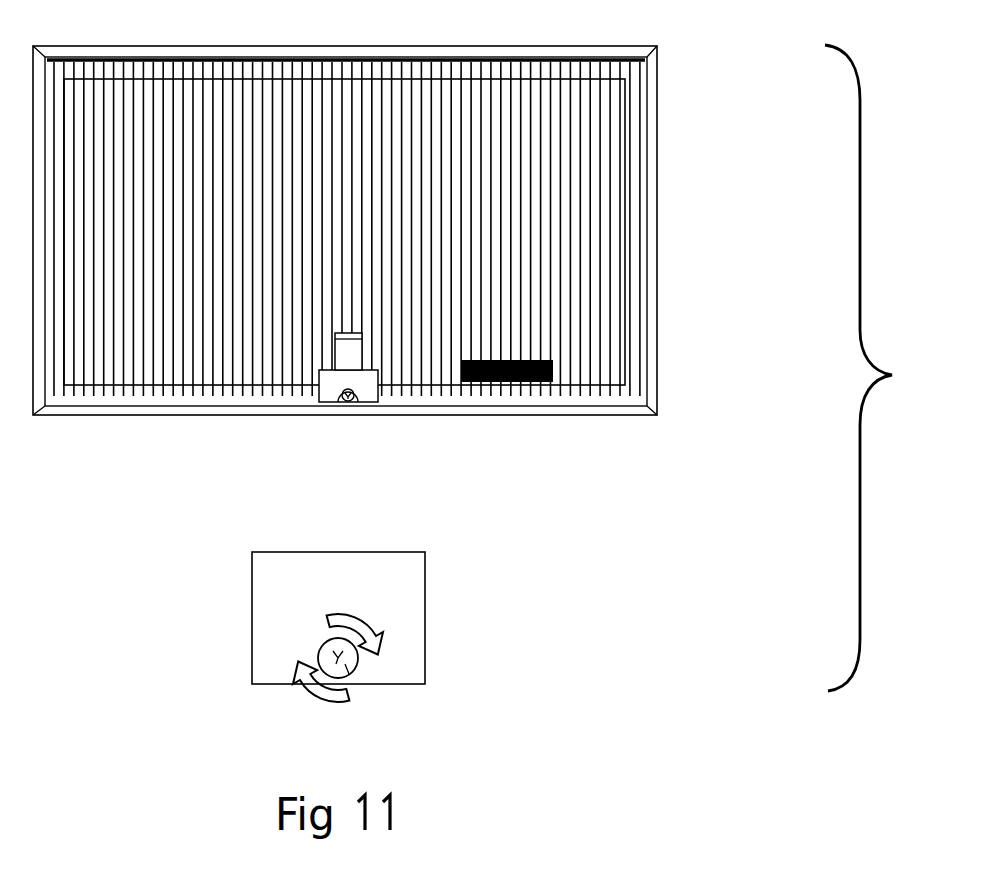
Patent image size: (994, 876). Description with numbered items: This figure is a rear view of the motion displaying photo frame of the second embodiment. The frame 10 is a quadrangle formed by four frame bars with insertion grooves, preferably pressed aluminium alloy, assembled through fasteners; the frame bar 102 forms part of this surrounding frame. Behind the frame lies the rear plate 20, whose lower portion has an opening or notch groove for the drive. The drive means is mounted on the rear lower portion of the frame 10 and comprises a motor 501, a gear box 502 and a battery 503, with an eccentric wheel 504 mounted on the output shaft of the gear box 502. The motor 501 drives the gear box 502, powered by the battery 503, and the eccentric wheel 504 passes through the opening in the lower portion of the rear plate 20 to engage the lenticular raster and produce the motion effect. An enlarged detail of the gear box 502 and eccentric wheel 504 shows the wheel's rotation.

The frame 10 is at (507, 50).
The rear plate 20 is at (578, 133).
The housing frame 102 is at (648, 225).
The motor 501 is at (330, 350).
The gear box 502 is at (365, 377).
The battery 503 is at (553, 378).
The eccentric wheel 504 is at (348, 402).